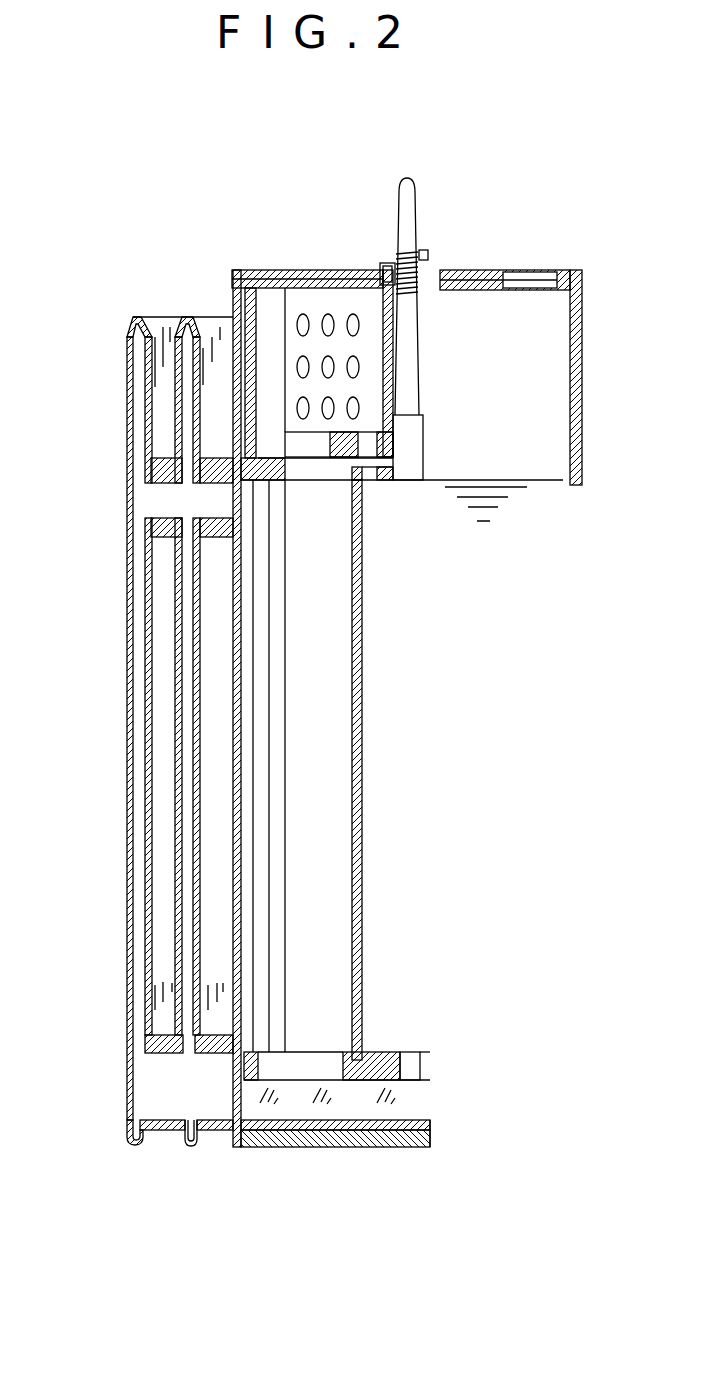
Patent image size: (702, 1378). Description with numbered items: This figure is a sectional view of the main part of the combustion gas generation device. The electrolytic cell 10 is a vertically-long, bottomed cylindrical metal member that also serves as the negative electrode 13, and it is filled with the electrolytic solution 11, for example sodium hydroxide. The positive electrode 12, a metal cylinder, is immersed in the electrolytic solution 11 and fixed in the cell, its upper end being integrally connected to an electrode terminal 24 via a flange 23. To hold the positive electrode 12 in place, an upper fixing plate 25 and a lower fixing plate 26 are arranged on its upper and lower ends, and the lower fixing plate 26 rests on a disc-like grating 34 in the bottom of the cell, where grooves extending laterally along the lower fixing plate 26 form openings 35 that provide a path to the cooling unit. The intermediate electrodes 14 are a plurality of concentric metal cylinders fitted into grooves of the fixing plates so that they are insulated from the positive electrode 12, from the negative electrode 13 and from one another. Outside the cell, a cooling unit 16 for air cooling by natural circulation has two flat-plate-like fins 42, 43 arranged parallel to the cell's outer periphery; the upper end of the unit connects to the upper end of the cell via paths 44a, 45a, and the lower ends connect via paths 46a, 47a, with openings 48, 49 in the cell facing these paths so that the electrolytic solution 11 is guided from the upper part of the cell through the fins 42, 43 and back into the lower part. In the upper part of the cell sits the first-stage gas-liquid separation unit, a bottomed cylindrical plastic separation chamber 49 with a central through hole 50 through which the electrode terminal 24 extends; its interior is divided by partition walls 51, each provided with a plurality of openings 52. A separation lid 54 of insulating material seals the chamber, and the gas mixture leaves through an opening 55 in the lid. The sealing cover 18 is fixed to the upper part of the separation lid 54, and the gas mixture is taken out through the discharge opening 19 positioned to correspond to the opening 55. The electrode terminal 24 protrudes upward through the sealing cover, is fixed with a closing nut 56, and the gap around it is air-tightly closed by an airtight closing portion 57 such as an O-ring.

The electrolytic cell 10 is at (233, 300).
The negative electrode 13 is at (402, 469).
The electrolytic solution 11 is at (527, 478).
The positive electrode 12 is at (363, 931).
The intermediate electrodes 14 is at (290, 645).
The cooling unit 16 is at (106, 721).
The sealing cover 18 is at (470, 278).
The discharge opening 19 is at (530, 278).
The flange 23 is at (401, 482).
The electrode terminal 24 is at (410, 176).
The upper fixing plate 25 is at (356, 476).
The lower fixing plate 26 is at (382, 1052).
The grating 34 is at (430, 1125).
The openings 35 is at (338, 1106).
The fin 42 is at (172, 318).
The fin 43 is at (127, 352).
The path 44a is at (200, 456).
The path 45a is at (160, 516).
The path 46a is at (213, 1140).
The path 47a is at (158, 1134).
The opening 48 is at (248, 505).
The separation chamber 49 is at (246, 290).
The through hole 50 is at (396, 331).
The partition wall 51 is at (372, 388).
The openings 52 is at (352, 316).
The separation lid 54 is at (478, 291).
The opening 55 is at (527, 291).
The closing nut 56 is at (428, 252).
The airtight closing portion 57 is at (381, 268).